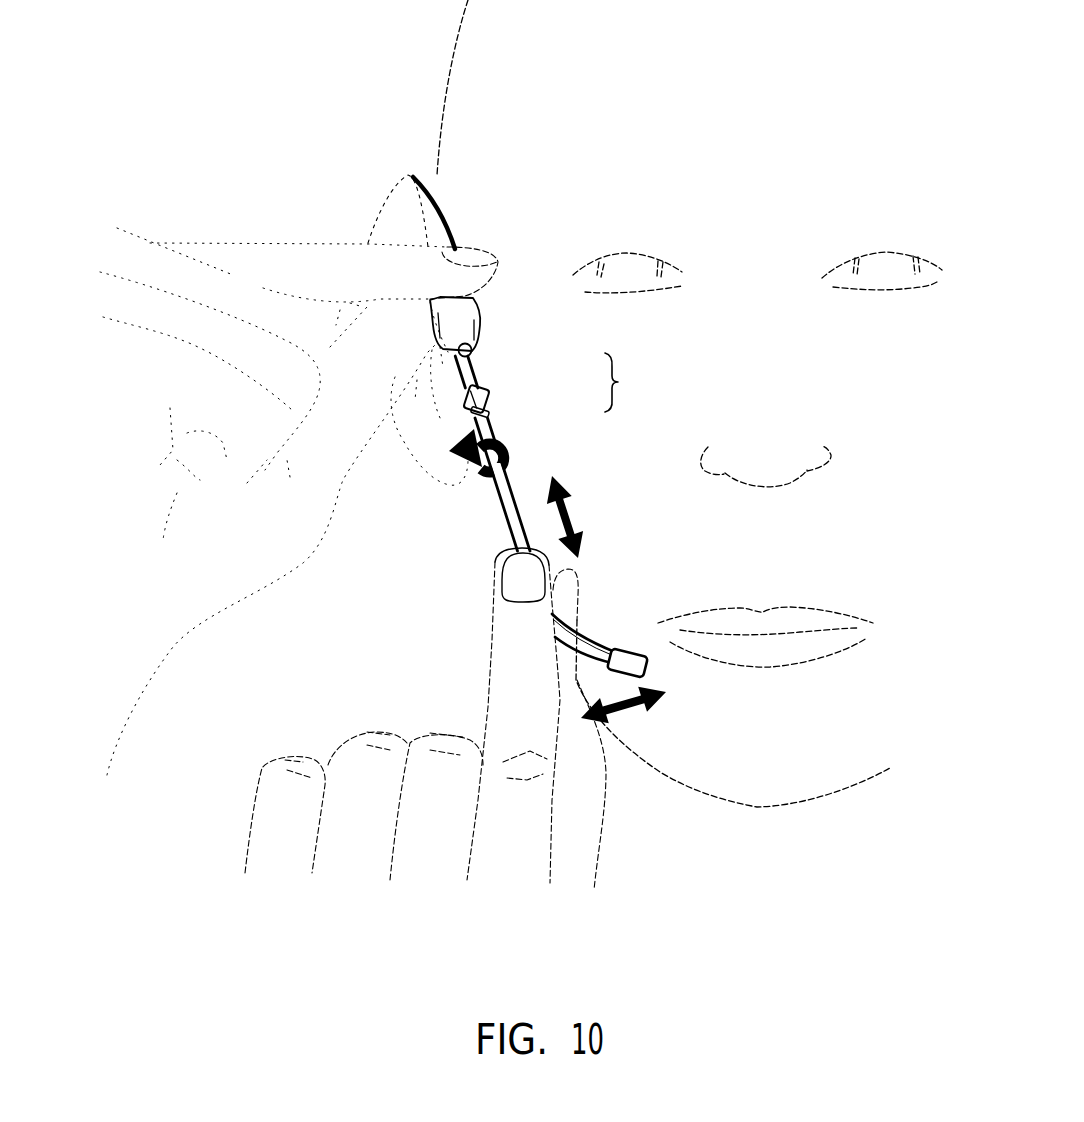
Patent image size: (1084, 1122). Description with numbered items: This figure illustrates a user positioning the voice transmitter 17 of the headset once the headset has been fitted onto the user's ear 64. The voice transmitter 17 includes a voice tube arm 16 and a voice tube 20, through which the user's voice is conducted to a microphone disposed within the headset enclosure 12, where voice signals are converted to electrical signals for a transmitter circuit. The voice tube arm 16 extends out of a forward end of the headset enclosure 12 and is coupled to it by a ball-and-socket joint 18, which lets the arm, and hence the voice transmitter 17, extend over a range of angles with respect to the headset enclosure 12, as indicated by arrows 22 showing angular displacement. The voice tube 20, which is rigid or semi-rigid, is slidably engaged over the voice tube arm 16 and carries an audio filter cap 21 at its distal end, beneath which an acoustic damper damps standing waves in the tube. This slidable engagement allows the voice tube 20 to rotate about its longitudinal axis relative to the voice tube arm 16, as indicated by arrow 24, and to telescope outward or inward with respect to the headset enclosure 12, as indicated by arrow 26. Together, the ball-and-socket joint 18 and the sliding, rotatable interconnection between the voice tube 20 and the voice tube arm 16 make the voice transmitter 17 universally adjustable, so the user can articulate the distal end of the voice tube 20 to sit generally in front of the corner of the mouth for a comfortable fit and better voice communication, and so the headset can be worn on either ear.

The headset enclosure 12 is at (417, 177).
The user's ear 64 is at (375, 237).
The ball-and-socket joint 18 is at (482, 350).
The voice tube arm 16 is at (478, 368).
The voice transmitter 17 is at (632, 382).
The arrow indicating rotation 24 is at (506, 448).
The voice tube 20 is at (511, 525).
The arrow indicating extension 26 is at (572, 520).
The audio filter cap 21 is at (636, 659).
The arrows indicating angular displacement 22 is at (634, 709).